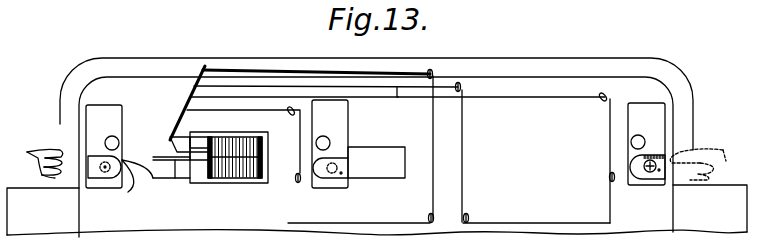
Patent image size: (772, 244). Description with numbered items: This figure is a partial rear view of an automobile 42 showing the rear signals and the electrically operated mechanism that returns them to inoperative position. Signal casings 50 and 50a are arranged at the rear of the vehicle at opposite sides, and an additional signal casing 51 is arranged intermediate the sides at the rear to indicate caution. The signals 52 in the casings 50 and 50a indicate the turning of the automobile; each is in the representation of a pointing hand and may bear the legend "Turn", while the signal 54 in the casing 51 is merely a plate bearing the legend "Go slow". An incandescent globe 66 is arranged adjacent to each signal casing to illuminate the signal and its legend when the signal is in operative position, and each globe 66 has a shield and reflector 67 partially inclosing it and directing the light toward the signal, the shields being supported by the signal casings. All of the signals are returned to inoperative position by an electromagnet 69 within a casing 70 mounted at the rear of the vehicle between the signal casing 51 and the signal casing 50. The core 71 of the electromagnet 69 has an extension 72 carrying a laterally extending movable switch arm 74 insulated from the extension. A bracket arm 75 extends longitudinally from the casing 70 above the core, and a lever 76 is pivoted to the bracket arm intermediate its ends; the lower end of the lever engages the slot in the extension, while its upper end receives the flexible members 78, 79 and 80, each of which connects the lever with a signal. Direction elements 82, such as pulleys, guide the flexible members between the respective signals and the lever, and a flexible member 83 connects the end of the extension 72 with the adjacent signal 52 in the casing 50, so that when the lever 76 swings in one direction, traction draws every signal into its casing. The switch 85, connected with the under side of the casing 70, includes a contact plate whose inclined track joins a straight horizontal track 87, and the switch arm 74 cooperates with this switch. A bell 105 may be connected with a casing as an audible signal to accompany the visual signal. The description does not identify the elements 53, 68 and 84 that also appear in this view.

The automobile 42 is at (493, 112).
The signal casing 50 is at (107, 105).
The signal casing 50a is at (652, 108).
The additional signal casing 51 is at (330, 110).
The signal 52 is at (47, 170).
The turn indicator tab 53 is at (80, 173).
The signal 54 is at (387, 178).
The incandescent globe 66 is at (62, 153).
The shield and reflector 67 is at (90, 156).
The casing 68 is at (63, 116).
The electromagnet 69 is at (236, 176).
The casing 70 is at (266, 172).
The core 71 is at (208, 162).
The extension 72 is at (158, 156).
The switch arm 74 is at (180, 183).
The bracket arm 75 is at (193, 138).
The lever 76 is at (186, 113).
The flexible member 78 is at (230, 107).
The flexible member 79 is at (292, 97).
The flexible member 80 is at (466, 150).
The direction elements 82 is at (288, 113).
The flexible member 83 is at (130, 186).
The contact 84 is at (192, 145).
The switch 85 is at (177, 180).
The straight horizontal track 87 is at (397, 72).
The bell 105 is at (115, 137).